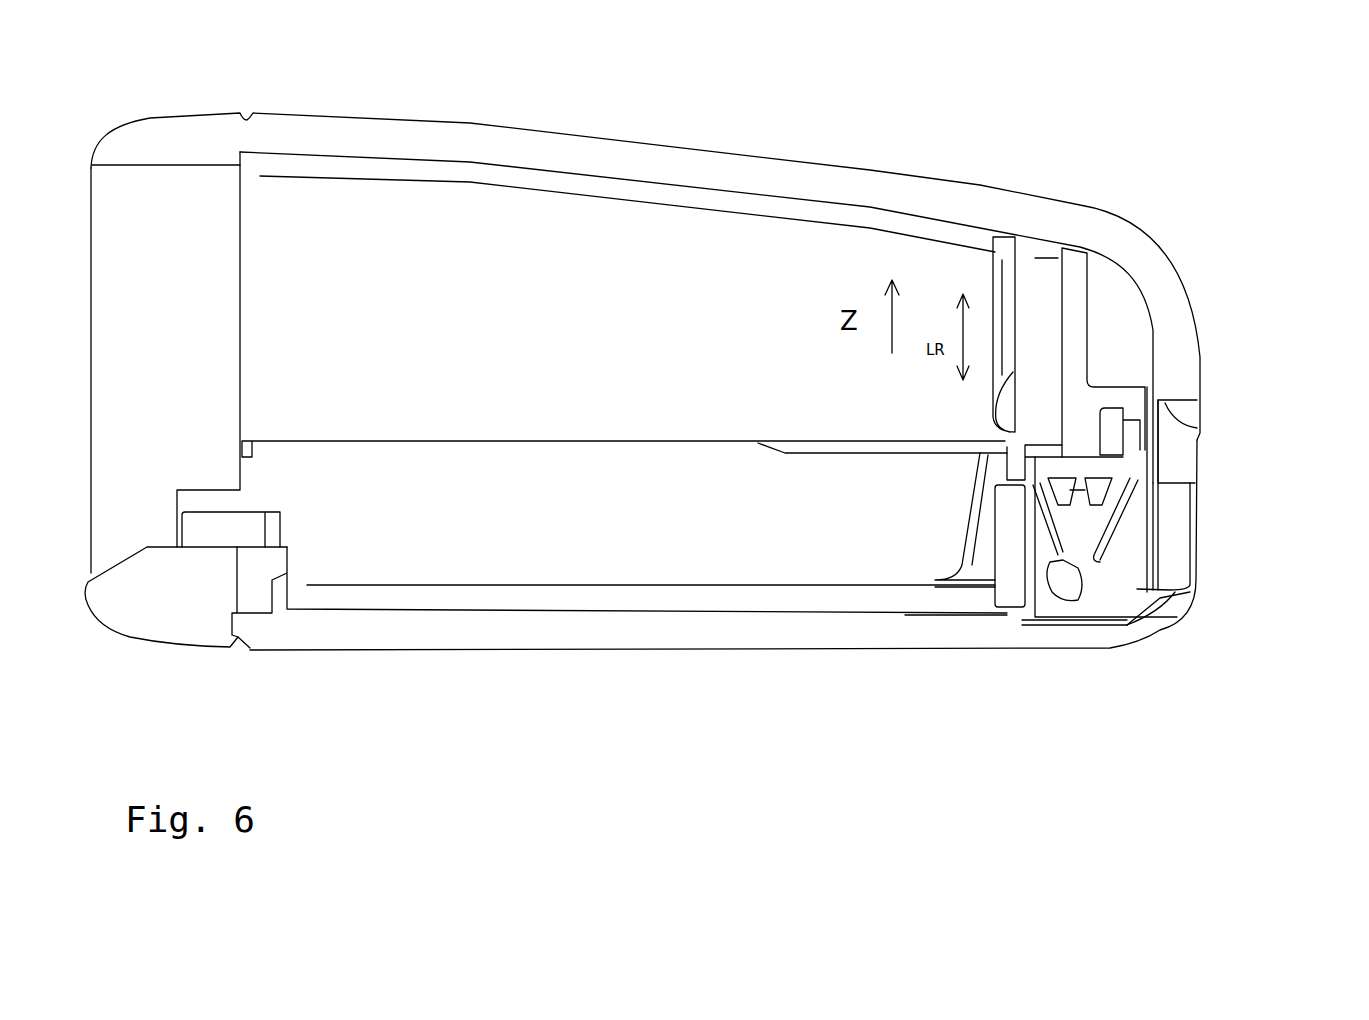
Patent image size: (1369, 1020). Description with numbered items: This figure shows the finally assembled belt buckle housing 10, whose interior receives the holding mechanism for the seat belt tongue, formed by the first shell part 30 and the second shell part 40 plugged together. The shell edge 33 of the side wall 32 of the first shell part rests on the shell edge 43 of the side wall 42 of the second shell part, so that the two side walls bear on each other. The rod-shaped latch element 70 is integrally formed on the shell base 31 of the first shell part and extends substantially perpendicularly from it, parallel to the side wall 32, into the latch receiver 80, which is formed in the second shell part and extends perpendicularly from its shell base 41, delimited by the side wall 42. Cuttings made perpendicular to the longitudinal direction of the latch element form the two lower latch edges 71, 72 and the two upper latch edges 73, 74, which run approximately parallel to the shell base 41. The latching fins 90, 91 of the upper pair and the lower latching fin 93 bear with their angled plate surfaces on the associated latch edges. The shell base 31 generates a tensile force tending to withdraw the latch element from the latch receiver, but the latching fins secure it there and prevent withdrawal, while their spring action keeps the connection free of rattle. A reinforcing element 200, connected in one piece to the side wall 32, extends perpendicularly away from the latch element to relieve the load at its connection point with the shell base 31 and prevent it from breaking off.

The belt buckle housing 10 is at (1118, 141).
The first shell part 30 is at (850, 190).
The shell base 31 is at (723, 173).
The side wall 32 is at (1183, 306).
The shell edge 33 is at (1207, 407).
The second shell part 40 is at (557, 640).
The shell base 41 is at (730, 592).
The side wall 42 is at (1183, 465).
The shell edge 43 is at (1203, 435).
The latch element 70 is at (1080, 325).
The lower latch edge 71 is at (1097, 613).
The lower latch edge 72 is at (1095, 590).
The upper latch edge 73 is at (1075, 480).
The upper latch edge 74 is at (1088, 450).
The latch receiver 80 is at (1063, 610).
The latching fin 90 is at (1052, 495).
The latching fin 91 is at (1120, 490).
The lower latching fin 93 is at (1118, 540).
The reinforcing element 200 is at (1150, 381).